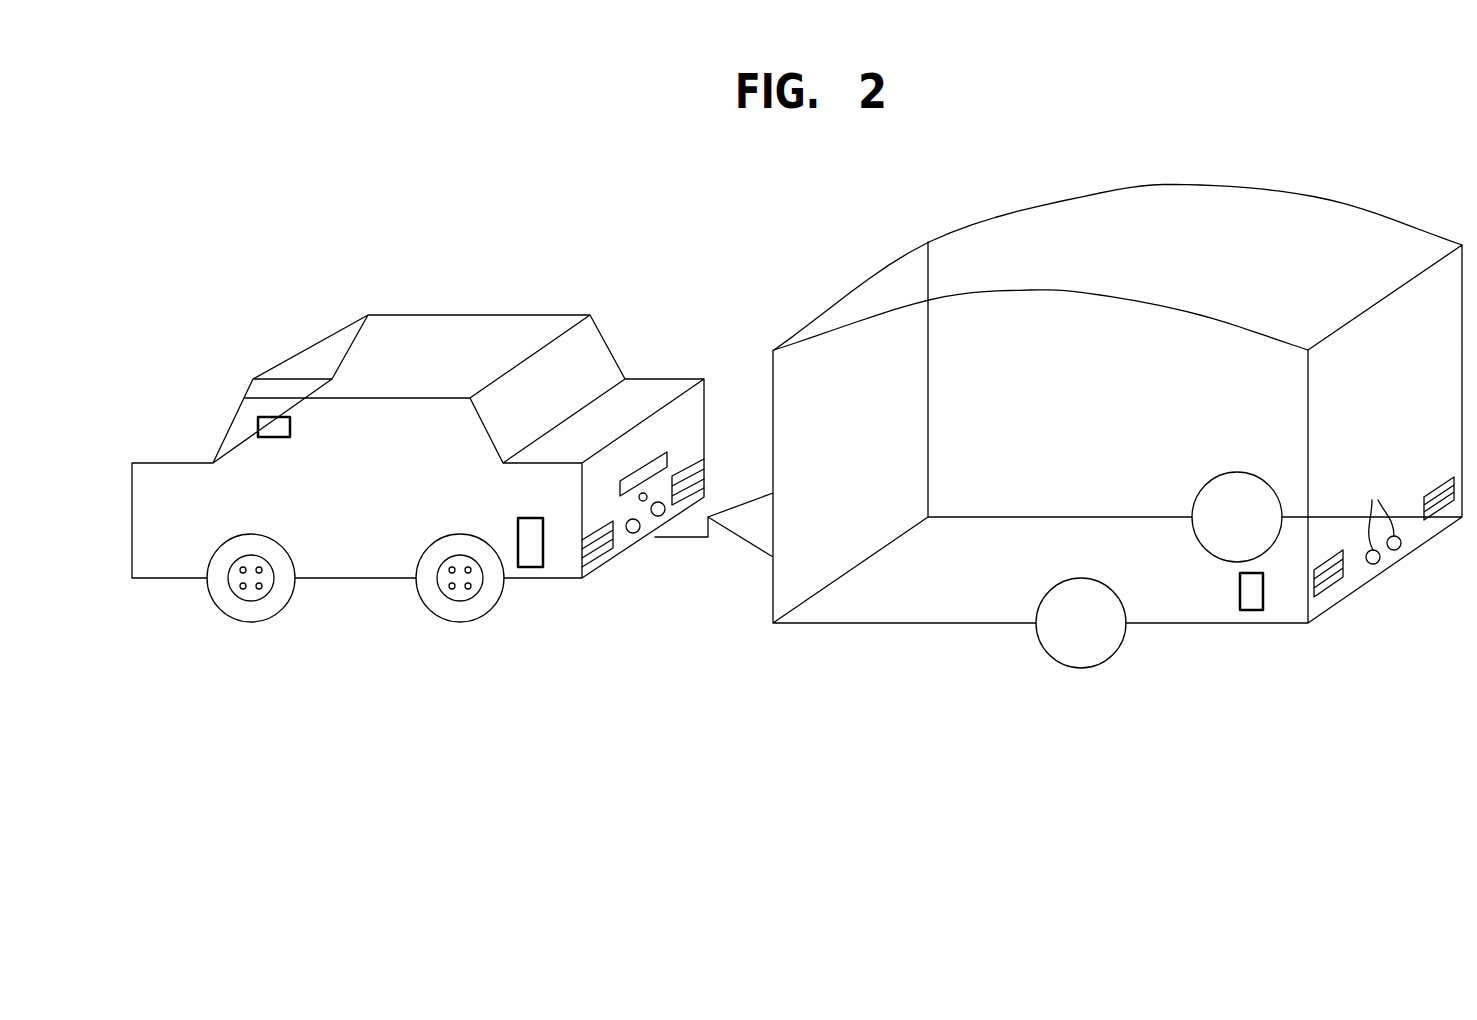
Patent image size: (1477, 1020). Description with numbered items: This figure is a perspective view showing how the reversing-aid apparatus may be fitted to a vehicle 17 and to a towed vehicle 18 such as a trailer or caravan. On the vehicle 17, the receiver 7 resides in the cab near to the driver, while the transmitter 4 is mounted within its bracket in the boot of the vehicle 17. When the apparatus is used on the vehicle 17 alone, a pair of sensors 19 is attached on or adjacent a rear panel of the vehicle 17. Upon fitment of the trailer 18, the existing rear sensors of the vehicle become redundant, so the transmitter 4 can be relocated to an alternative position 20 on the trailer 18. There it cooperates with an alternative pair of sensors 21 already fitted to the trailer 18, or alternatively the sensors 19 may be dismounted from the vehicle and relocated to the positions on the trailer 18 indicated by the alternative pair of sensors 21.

The vehicle 17 is at (461, 305).
The towed vehicle 18 is at (1300, 206).
The receiver 7 is at (283, 437).
The transmitter 4 is at (531, 562).
The pair of sensors 19 is at (635, 533).
The alternative position 20 is at (1250, 603).
The alternative pair of sensors 21 is at (1380, 560).